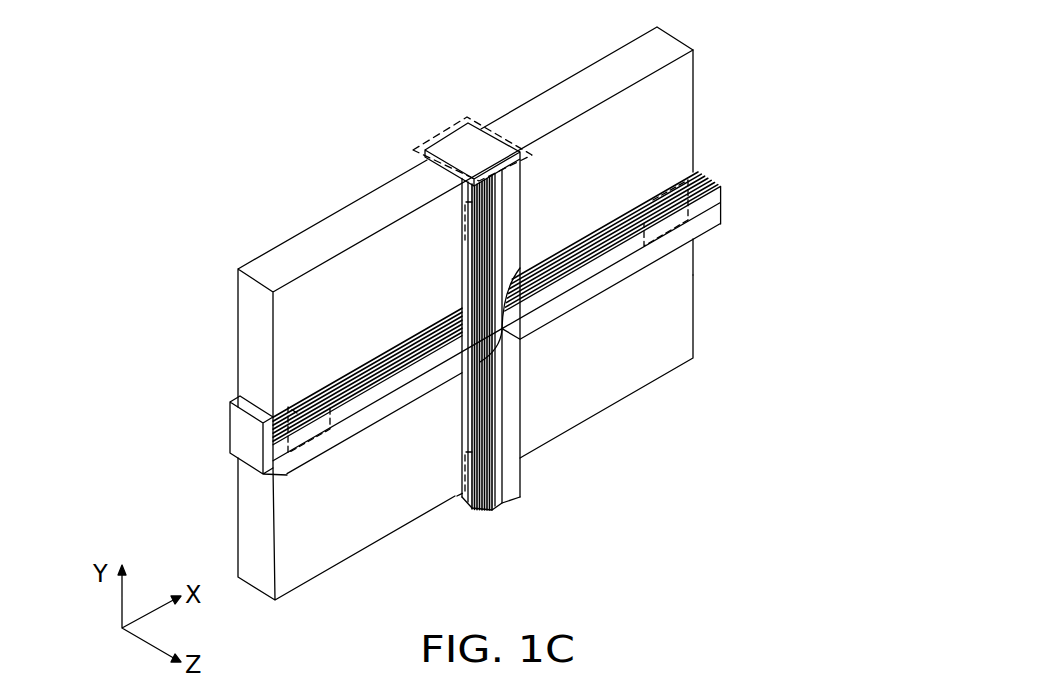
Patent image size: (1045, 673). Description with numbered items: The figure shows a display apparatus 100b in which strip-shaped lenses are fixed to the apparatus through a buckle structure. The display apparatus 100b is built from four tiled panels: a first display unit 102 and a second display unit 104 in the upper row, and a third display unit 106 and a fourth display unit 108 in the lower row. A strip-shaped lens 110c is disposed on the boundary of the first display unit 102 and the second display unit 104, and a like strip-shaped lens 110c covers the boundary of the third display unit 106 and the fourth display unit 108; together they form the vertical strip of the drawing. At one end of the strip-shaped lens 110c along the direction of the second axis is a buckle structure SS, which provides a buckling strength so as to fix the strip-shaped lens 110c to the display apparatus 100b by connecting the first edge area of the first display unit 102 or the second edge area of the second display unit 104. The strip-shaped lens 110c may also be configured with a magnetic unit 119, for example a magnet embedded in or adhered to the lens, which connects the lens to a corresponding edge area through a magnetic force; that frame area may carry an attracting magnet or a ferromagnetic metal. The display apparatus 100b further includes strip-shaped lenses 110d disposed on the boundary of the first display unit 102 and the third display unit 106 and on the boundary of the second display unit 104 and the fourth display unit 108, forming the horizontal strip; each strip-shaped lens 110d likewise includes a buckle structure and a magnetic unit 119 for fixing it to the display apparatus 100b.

The display apparatus 100b is at (727, 391).
The first display unit 102 is at (352, 275).
The second display unit 104 is at (563, 142).
The third display unit 106 is at (368, 520).
The fourth display unit 108 is at (595, 410).
The strip-shaped lens 110c is at (516, 150).
The strip-shaped lens 110d is at (703, 218).
The magnetic unit 119 is at (463, 228).
The buckle structure SS is at (428, 137).